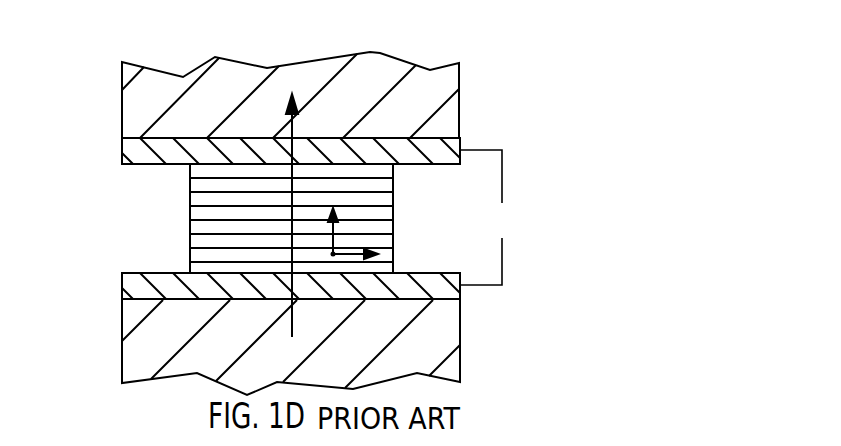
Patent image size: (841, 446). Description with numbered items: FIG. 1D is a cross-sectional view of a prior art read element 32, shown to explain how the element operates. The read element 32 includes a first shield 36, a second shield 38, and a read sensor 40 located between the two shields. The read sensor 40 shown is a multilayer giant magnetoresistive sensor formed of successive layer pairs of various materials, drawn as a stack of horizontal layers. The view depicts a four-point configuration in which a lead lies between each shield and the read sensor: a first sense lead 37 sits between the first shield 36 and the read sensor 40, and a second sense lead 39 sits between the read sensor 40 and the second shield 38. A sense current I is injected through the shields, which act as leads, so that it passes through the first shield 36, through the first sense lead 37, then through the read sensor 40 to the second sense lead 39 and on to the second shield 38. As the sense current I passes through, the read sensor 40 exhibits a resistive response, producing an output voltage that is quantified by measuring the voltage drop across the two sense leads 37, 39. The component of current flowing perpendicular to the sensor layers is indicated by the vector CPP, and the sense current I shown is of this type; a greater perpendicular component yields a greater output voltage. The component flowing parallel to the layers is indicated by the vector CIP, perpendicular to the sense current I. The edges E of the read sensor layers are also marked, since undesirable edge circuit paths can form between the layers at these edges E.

The read element 32 is at (290, 200).
The second shield 38 is at (453, 112).
The second sense lead 39 is at (137, 153).
The read sensor 40 is at (128, 222).
The first sense lead 37 is at (137, 287).
The first shield 36 is at (455, 330).
The sense current I is at (294, 215).
The edges of the read sensor layers E is at (177, 210).
The current-perpendicular-to-plane component CPP is at (333, 224).
The current-in-plane component CIP is at (355, 255).